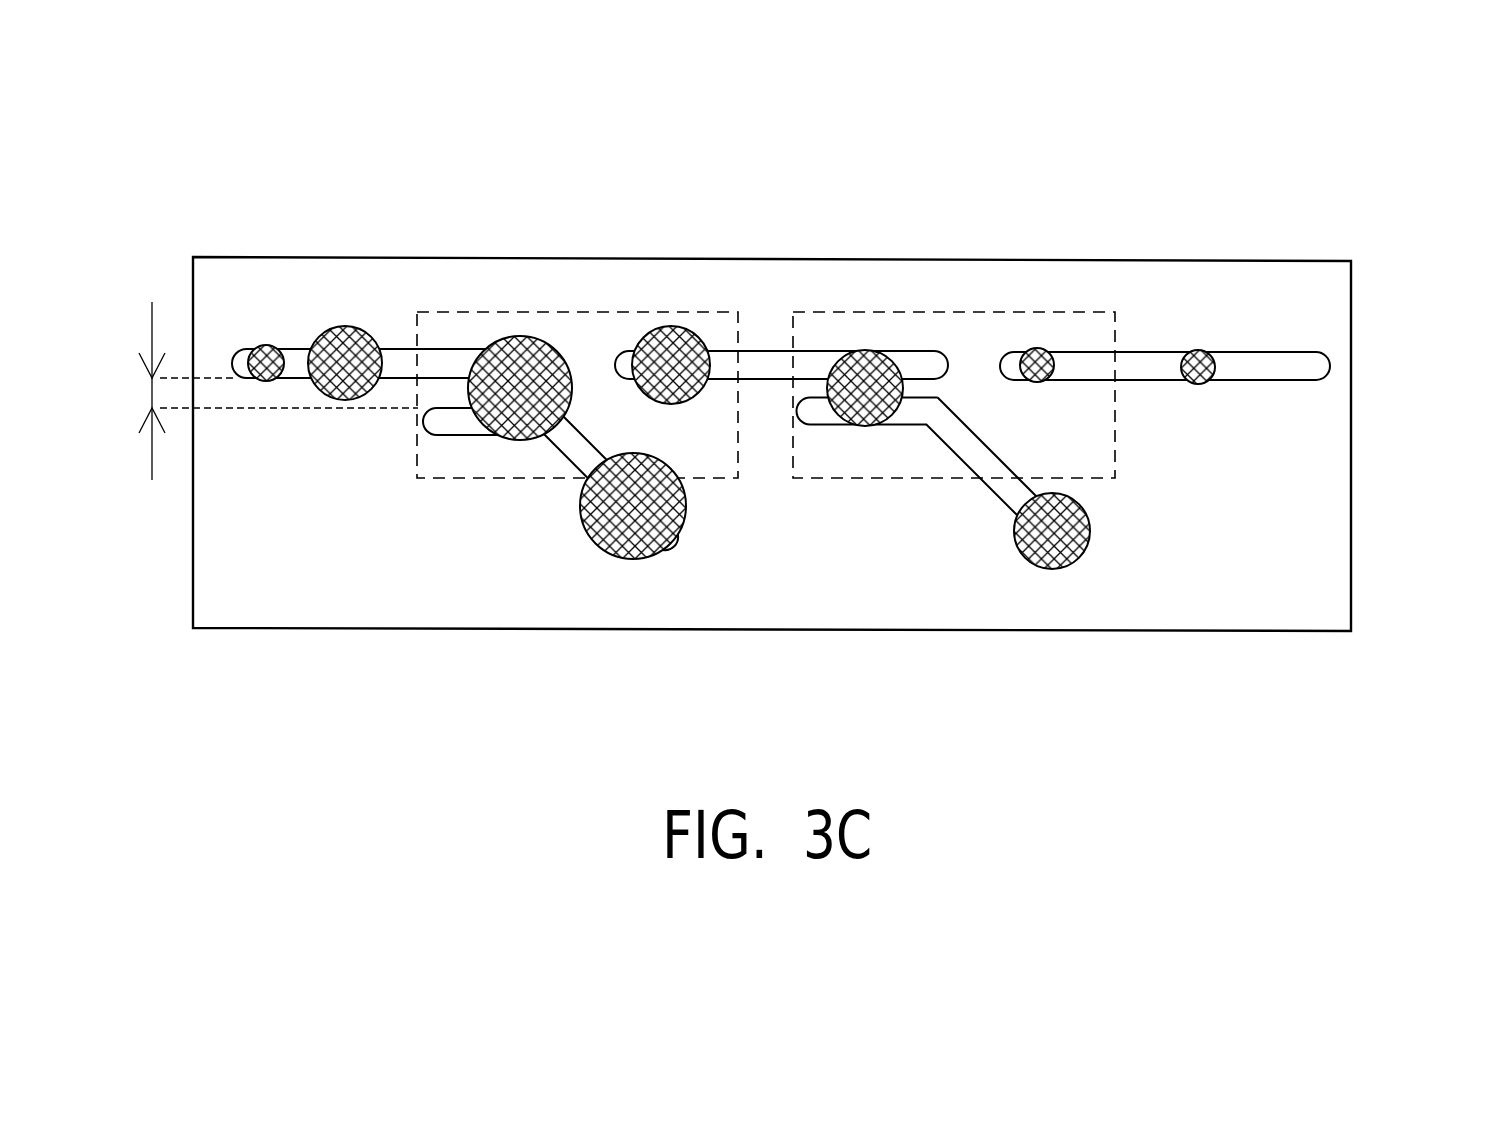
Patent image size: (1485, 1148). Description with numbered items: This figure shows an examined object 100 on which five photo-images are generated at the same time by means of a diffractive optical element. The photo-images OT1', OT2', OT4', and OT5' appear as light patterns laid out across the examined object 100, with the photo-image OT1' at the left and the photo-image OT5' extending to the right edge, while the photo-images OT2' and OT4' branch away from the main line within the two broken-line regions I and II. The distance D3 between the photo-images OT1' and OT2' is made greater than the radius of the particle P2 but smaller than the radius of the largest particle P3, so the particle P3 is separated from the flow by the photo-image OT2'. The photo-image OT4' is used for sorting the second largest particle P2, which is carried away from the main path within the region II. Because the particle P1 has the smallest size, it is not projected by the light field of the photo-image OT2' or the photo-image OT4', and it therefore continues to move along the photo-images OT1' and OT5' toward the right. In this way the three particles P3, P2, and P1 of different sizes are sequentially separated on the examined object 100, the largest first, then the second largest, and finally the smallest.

The examined object 100 is at (1351, 282).
The photo-image OT1' is at (246, 271).
The photo-image OT2' is at (650, 578).
The photo-image OT4' is at (1026, 599).
The photo-image OT5' is at (1224, 371).
The particle P1 is at (1193, 350).
The particle P2 is at (866, 353).
The particle P3 is at (515, 353).
The first region I is at (575, 312).
The second region II is at (952, 312).
The distance D3 is at (261, 391).